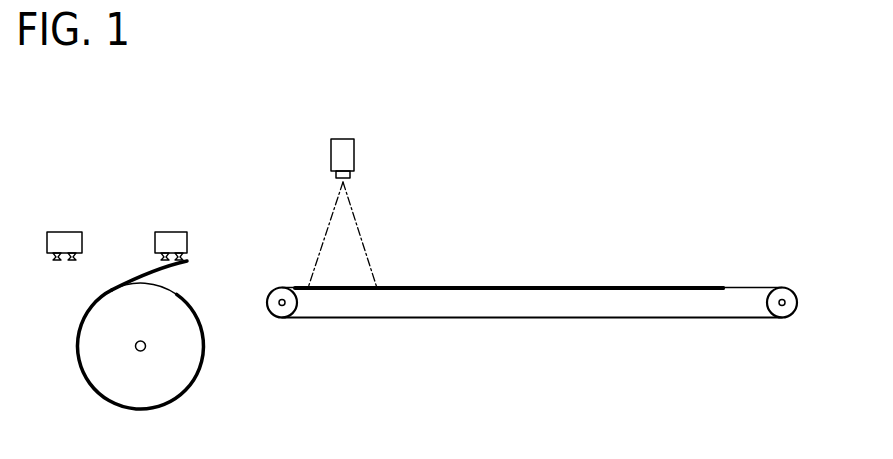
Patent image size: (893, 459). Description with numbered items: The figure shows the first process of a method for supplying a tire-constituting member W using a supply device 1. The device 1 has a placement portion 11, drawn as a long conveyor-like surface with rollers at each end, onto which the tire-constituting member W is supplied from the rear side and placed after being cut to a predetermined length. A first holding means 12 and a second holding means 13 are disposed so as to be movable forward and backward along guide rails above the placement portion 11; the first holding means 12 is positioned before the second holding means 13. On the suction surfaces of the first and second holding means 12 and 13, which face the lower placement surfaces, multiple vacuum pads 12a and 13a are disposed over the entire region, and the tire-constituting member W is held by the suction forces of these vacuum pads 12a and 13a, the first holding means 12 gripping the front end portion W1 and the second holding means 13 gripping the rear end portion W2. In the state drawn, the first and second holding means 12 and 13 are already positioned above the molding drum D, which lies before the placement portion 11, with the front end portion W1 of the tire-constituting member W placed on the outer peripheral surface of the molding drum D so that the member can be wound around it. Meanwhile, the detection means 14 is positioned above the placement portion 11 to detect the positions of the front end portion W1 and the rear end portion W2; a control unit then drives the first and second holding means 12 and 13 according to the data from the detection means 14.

The device for supplying a tire-constituting member 1 is at (765, 148).
The placement portion 11 is at (793, 290).
The first holding means 12 is at (66, 232).
The vacuum pads 12a is at (72, 262).
The second holding means 13 is at (172, 232).
The vacuum pads 13a is at (186, 258).
The detection means 14 is at (342, 138).
The tire-constituting member W is at (113, 288).
The front end portion W1 is at (342, 288).
The rear end portion W2 is at (723, 287).
The molding drum D is at (162, 290).